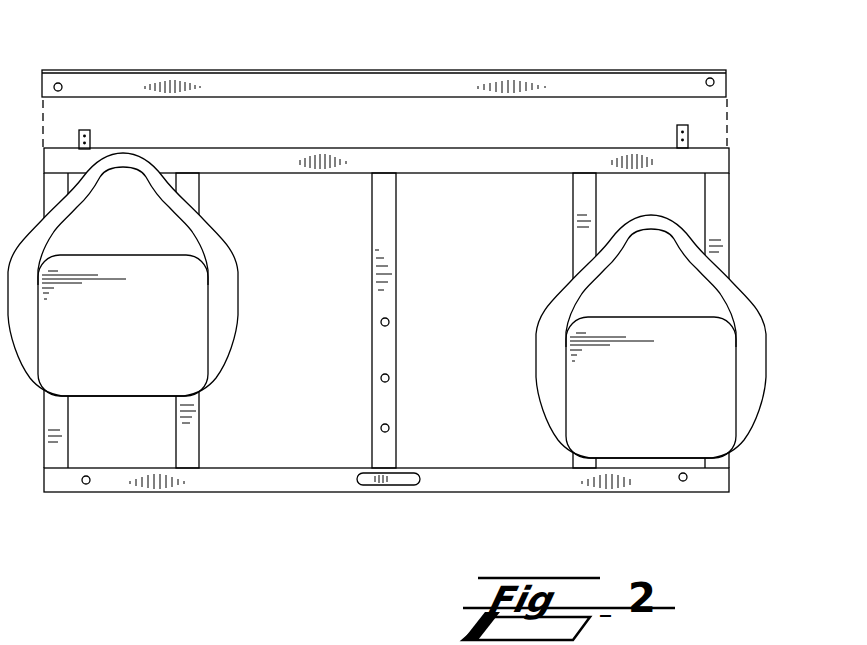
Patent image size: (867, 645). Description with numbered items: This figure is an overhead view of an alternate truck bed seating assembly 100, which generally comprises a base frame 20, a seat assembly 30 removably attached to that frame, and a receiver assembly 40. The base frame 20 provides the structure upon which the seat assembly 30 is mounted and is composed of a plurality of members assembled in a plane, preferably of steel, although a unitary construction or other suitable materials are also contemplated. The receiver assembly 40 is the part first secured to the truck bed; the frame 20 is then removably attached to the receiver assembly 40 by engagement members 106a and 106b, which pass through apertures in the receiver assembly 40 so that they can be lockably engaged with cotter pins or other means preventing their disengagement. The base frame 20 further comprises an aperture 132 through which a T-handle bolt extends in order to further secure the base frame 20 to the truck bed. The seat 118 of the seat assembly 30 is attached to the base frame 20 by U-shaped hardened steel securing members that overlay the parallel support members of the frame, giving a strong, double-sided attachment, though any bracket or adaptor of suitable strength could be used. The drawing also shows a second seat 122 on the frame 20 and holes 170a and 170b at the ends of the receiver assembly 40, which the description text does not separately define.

The truck bed seating assembly 100 is at (520, 42).
The receiver assembly 40 is at (403, 70).
The mounting hole 170a is at (708, 78).
The mounting hole 170b is at (57, 82).
The engagement member 106a is at (677, 134).
The engagement member 106b is at (92, 134).
The base frame 20 is at (224, 503).
The seat assembly 30 is at (757, 468).
The seat cushion 122 is at (237, 328).
The seat 118 is at (538, 351).
The aperture 132 is at (387, 485).